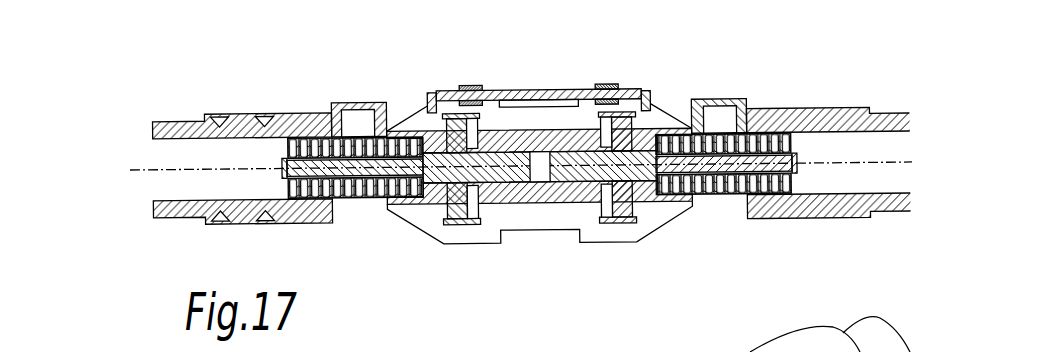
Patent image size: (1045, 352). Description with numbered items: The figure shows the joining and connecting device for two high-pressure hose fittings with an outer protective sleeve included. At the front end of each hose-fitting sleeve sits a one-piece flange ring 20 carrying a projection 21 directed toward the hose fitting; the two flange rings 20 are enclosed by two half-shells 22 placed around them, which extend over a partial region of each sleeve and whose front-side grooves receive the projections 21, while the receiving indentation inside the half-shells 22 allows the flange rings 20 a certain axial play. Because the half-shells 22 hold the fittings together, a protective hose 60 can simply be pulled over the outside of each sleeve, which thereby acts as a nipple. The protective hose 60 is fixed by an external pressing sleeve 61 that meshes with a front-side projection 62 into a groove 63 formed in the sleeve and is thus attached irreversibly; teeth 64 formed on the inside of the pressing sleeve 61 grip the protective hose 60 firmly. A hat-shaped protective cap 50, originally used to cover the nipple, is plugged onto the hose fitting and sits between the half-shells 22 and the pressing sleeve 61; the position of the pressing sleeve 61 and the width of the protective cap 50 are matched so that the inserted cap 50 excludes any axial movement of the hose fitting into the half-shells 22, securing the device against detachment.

The flange ring 20 is at (449, 143).
The projection 21 is at (431, 93).
The half-shells 22 is at (470, 242).
The protective cap 50 is at (365, 104).
The protective hose 60 is at (176, 218).
The pressing sleeve 61 is at (279, 216).
The projection 62 is at (333, 203).
The groove 63 is at (343, 203).
The teeth 64 is at (239, 206).